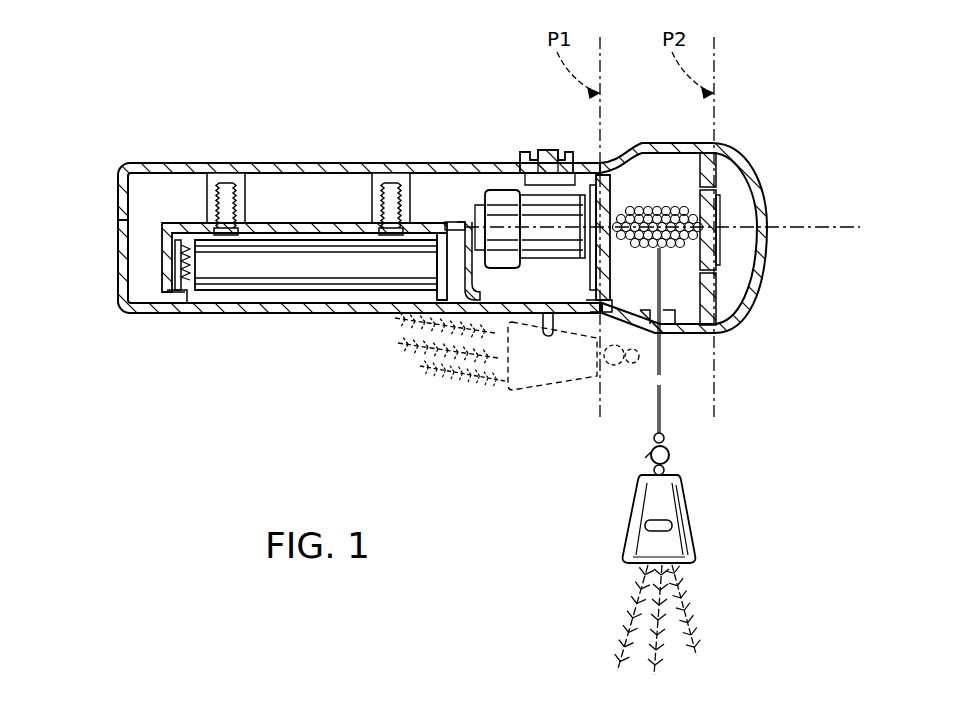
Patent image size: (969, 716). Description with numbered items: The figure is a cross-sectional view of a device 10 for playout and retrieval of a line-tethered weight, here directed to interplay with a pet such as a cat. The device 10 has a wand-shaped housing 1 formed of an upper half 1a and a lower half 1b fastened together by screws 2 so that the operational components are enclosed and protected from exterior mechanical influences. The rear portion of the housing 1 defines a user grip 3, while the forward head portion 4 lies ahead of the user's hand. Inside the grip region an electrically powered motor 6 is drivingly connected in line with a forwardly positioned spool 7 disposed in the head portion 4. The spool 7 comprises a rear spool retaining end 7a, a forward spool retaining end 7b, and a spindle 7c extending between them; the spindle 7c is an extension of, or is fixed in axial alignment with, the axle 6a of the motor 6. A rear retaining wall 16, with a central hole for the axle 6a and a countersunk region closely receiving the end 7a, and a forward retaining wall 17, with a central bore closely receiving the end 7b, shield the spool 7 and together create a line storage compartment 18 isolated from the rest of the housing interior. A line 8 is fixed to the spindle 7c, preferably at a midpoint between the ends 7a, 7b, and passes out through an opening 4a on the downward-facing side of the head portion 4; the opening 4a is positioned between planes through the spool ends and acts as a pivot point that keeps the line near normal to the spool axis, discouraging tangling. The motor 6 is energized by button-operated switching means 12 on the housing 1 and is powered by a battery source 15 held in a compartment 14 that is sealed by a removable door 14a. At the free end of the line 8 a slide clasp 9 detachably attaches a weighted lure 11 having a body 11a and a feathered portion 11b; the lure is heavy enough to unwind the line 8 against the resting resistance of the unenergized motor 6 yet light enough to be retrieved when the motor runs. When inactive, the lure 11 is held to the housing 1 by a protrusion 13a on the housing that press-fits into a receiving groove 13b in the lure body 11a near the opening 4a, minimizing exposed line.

The housing 1 is at (314, 238).
The upper half 1a is at (118, 183).
The lower half 1b is at (331, 266).
The screws 2 is at (375, 165).
The user grip 3 is at (427, 165).
The head portion 4 is at (668, 145).
The opening 4a is at (668, 332).
The motor 6 is at (488, 200).
The axle 6a is at (606, 302).
The spool 7 is at (731, 180).
The rear spool retaining end 7a is at (677, 180).
The forward spool retaining end 7b is at (761, 209).
The spindle 7c is at (613, 258).
The line 8 is at (670, 400).
The slide clasp 9 is at (672, 452).
The device 10 is at (331, 110).
The weighted lure 11 is at (674, 575).
The body 11a is at (665, 508).
The feathered portion 11b is at (688, 618).
The switching means 12 is at (545, 150).
The protrusion 13a is at (540, 335).
The receiving groove 13b is at (645, 525).
The compartment 14 is at (290, 237).
The removable door 14a is at (378, 313).
The battery source 15 is at (318, 260).
The rear retaining wall 16 is at (600, 295).
The forward retaining wall 17 is at (780, 252).
The line storage compartment 18 is at (722, 290).